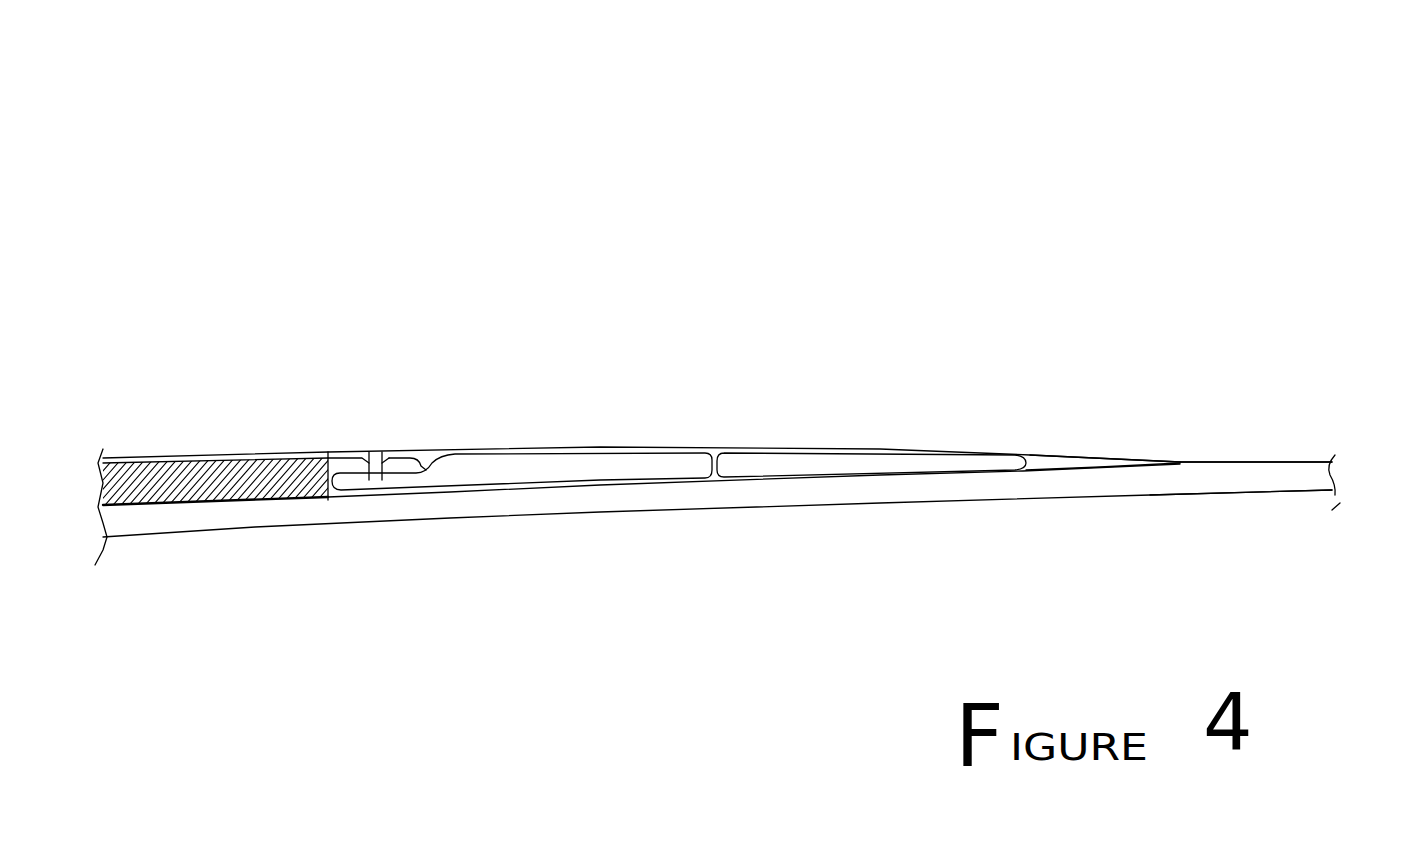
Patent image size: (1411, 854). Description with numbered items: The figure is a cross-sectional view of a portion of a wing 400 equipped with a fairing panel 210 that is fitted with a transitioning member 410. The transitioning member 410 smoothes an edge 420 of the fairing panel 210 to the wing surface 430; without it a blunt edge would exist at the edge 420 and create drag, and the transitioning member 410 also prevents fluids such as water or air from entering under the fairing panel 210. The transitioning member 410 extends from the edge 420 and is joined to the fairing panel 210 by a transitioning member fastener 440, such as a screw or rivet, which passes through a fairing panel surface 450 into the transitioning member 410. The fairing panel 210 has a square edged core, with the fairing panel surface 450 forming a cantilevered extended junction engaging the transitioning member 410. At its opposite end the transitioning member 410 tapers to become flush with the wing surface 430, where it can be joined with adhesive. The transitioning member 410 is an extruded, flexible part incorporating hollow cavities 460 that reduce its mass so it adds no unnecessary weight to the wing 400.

The wing 400 is at (1183, 152).
The transitioning member 410 is at (1057, 462).
The edge 420 is at (418, 453).
The wing surface 430 is at (1305, 455).
The transitioning member fastener 440 is at (378, 453).
The fairing panel surface 450 is at (278, 458).
The hollow cavities 460 is at (752, 463).
The fairing panel 210 is at (172, 480).